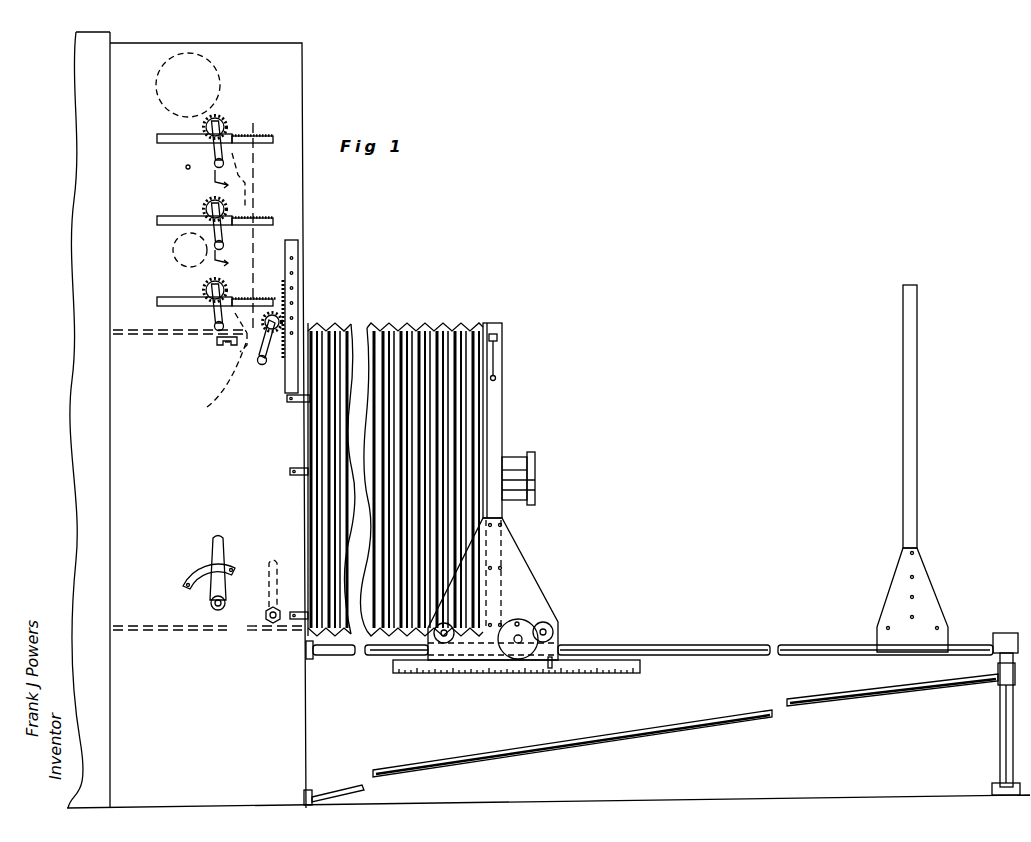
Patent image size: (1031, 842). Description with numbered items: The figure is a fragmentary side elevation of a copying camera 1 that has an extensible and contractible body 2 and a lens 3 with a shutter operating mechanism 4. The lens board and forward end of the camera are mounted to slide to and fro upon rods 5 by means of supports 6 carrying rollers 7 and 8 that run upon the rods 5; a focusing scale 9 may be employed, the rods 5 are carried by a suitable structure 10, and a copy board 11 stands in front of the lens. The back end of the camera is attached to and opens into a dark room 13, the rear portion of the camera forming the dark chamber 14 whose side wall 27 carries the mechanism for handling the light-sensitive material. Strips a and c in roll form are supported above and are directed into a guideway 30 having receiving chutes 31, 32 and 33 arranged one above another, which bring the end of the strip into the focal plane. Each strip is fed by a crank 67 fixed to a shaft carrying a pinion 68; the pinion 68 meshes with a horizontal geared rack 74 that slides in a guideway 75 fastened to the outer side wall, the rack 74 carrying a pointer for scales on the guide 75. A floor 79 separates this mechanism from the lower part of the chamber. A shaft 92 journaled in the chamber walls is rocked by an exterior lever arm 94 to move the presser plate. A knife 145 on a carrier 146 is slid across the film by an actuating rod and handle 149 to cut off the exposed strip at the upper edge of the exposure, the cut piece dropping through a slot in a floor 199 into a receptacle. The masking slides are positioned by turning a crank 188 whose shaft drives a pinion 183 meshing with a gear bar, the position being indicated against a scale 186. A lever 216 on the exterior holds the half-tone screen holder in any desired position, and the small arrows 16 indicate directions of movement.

The camera 1 is at (503, 408).
The extensible and contractible body 2 is at (428, 325).
The lens 3 is at (537, 470).
The shutter operating mechanism 4 is at (498, 337).
The rods 5 is at (712, 636).
The supports 6 is at (528, 595).
The roller 7 is at (455, 640).
The roller 8 is at (557, 625).
The focusing scale 9 is at (560, 665).
The supporting structure 10 is at (1003, 725).
The copy board 11 is at (912, 481).
The dark room 13 is at (72, 201).
The dark chamber 14 is at (165, 185).
The direction arrow 16 is at (216, 221).
The side wall 27 is at (275, 68).
The guideway 30 is at (236, 350).
The receiving chute 31 is at (256, 157).
The receiving chute 32 is at (262, 243).
The receiving chute 33 is at (285, 300).
The crank 67 is at (214, 154).
The pinion 68 is at (203, 124).
The geared rack 74 is at (273, 138).
The guideway 75 is at (157, 139).
The floor 79 is at (138, 336).
The shaft 92 is at (218, 610).
The lever arm 94 is at (214, 545).
The knife 145 is at (211, 379).
The carrier 146 is at (215, 342).
The actuating rod and handle 149 is at (227, 346).
The pinion 183 is at (280, 318).
The scale 186 is at (297, 265).
The crank 188 is at (262, 366).
The floor 199 is at (153, 632).
The lever 216 is at (278, 556).
The light-sensitive strip a is at (215, 62).
The light-sensitive strip c is at (173, 252).